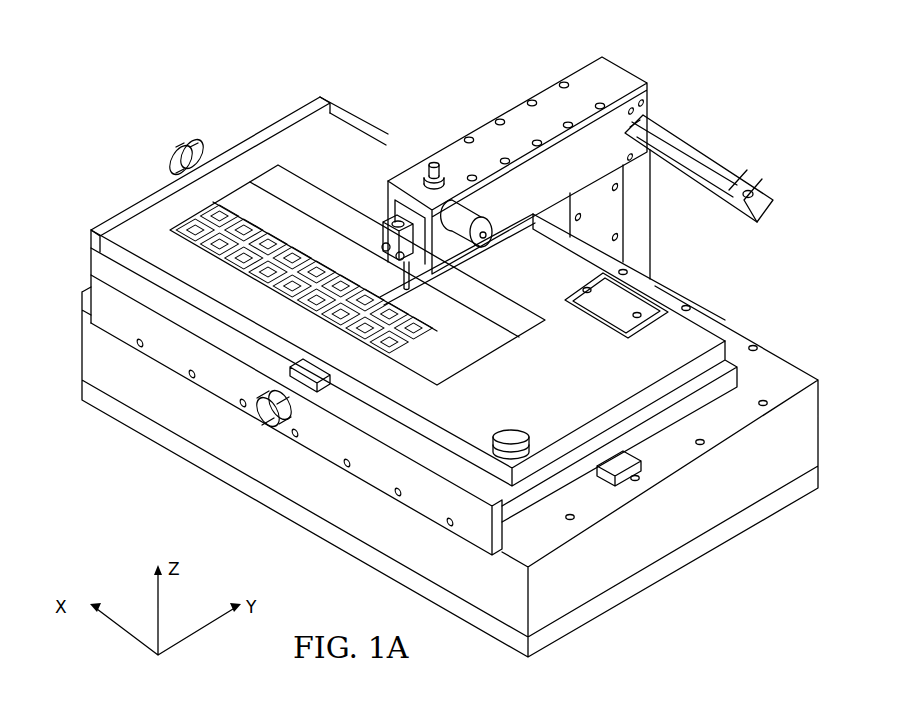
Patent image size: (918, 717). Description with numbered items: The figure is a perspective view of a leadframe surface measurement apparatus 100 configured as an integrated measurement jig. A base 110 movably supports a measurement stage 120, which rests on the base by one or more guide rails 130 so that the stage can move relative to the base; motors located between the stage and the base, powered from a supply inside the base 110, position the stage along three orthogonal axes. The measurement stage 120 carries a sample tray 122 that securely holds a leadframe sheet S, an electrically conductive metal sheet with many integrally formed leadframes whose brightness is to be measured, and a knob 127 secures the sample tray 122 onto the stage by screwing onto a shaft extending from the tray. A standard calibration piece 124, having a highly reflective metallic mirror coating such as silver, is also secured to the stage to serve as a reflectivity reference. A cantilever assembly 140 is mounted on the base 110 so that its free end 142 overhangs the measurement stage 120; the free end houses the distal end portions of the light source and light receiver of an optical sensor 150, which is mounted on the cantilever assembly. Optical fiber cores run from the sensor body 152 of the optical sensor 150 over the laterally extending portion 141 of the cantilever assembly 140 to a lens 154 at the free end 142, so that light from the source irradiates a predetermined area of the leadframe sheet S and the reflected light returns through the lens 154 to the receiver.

The leadframe surface measurement apparatus 100 is at (193, 78).
The base 110 is at (640, 555).
The measurement stage 120 is at (697, 342).
The sample tray 122 is at (535, 347).
The standard calibration piece 124 is at (643, 312).
The knob 127 is at (487, 432).
The guide rails 130 is at (322, 388).
The cantilever assembly 140 is at (634, 61).
The laterally extending portion 141 is at (518, 110).
The free end 142 is at (372, 193).
The optical sensor 150 is at (712, 104).
The sensor body 152 is at (746, 184).
The lens 154 is at (403, 276).
The leadframe sheet S is at (205, 240).